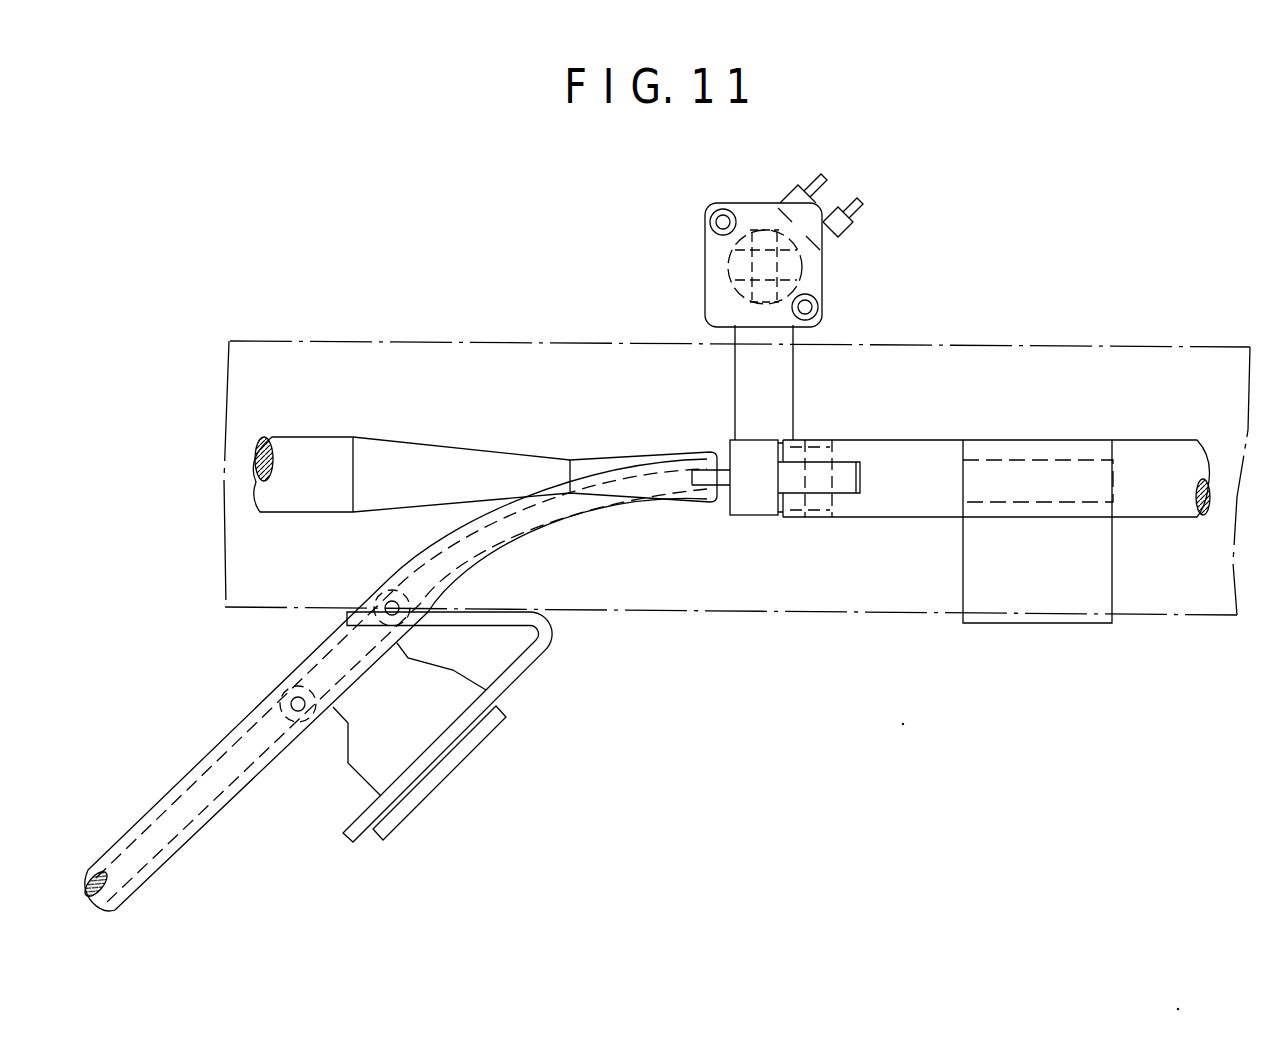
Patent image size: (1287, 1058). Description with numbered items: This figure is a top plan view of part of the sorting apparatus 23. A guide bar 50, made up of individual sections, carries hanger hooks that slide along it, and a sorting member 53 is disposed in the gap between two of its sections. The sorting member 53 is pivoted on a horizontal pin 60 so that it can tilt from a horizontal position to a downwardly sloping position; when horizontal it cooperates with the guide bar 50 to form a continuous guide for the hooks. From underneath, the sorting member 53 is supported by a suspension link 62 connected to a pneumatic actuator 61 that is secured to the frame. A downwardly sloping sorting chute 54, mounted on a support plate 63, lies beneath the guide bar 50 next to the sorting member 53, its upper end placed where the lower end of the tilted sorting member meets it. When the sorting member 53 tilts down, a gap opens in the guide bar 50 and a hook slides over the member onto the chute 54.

The sorting apparatus 23 is at (813, 417).
The guide bar 50 is at (342, 428).
The sorting member 53 is at (728, 443).
The sorting chute 54 is at (271, 691).
The horizontal pin 60 is at (833, 470).
The pneumatic actuator 61 is at (705, 262).
The suspension link 62 is at (727, 346).
The support plate 63 is at (546, 662).